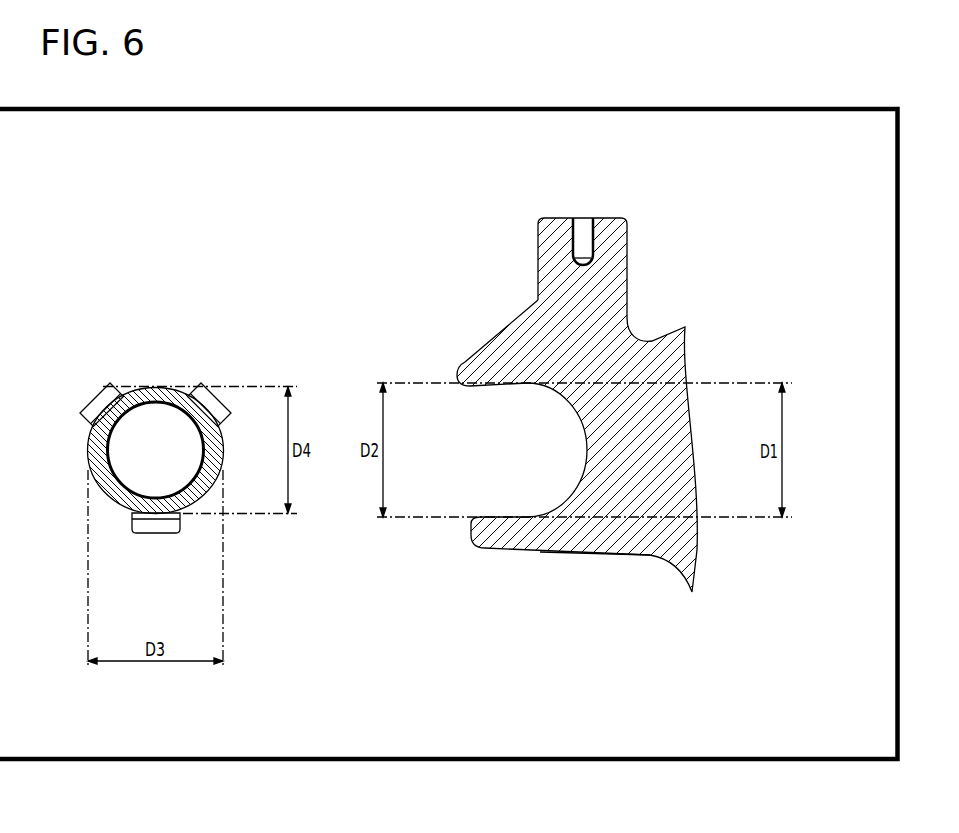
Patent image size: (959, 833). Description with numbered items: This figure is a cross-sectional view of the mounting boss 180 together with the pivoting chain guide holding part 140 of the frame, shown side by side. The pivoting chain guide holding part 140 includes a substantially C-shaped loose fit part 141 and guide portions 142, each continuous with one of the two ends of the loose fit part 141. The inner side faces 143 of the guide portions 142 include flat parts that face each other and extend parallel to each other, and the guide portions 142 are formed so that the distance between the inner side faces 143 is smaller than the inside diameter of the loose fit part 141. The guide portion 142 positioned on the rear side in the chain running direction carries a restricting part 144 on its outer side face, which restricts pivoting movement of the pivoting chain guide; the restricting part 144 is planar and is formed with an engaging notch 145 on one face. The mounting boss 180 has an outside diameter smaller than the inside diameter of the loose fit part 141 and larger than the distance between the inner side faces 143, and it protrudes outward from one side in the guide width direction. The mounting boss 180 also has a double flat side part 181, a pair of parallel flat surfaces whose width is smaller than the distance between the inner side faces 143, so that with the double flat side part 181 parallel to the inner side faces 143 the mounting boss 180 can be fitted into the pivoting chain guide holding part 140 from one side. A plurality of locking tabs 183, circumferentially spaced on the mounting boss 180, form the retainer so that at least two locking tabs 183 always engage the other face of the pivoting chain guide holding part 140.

The pivoting chain guide holding part 140 is at (625, 558).
The loose fit part 141 is at (578, 486).
The guide portions 142 is at (473, 362).
The inner side faces 143 is at (471, 390).
The restricting part 144 is at (618, 270).
The engaging notch 145 is at (585, 235).
The mounting boss 180 is at (177, 390).
The double flat side part 181 is at (138, 388).
The locking tabs 183 is at (92, 407).